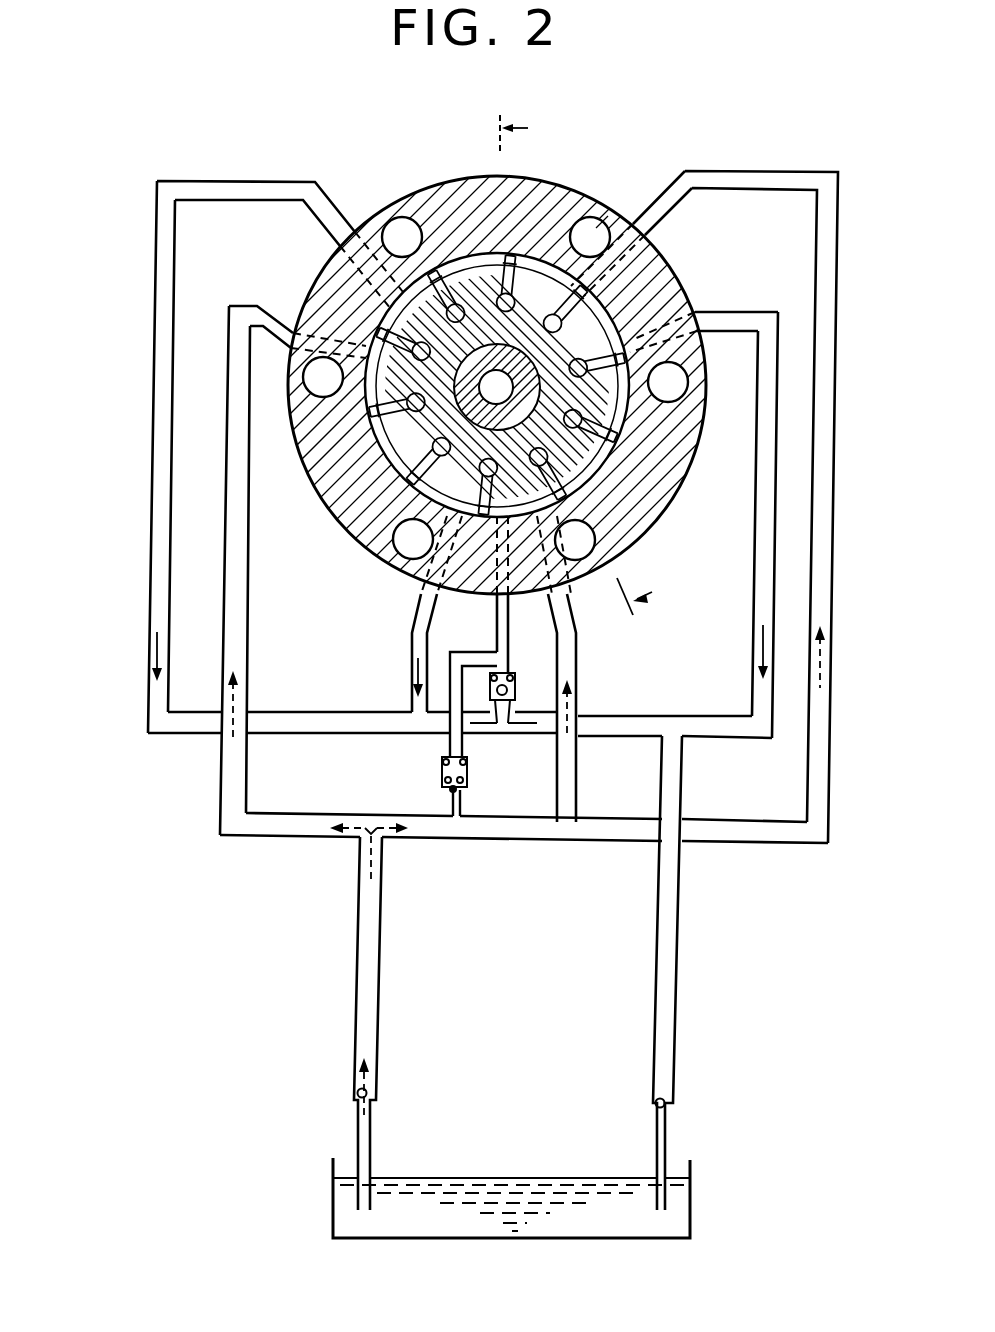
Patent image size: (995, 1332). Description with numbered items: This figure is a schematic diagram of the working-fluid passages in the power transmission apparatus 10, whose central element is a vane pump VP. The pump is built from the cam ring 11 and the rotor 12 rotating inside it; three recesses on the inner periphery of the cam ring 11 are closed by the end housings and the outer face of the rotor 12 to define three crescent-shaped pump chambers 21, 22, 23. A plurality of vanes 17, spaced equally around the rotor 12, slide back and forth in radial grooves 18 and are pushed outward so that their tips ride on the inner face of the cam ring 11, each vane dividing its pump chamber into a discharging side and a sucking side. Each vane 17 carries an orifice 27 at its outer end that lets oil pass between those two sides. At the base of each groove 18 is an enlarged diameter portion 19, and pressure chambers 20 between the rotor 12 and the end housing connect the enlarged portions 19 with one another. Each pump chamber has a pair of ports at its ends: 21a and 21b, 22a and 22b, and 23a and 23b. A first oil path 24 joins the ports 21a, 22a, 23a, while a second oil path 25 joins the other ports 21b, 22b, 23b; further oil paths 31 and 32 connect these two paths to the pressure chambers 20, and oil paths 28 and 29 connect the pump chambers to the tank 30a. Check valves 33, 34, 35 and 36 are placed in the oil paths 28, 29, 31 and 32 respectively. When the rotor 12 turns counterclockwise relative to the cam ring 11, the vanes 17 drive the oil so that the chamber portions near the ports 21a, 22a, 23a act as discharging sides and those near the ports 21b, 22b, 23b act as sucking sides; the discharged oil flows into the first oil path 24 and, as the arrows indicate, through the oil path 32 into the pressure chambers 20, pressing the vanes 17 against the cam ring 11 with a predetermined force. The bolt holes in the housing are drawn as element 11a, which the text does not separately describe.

The vane pump VP is at (319, 266).
The power transmission apparatus 10 is at (216, 817).
The cam ring 11 is at (568, 193).
The housing bolt hole 11a is at (390, 227).
The rotor 12 is at (660, 290).
The vanes 17 is at (563, 200).
The radial grooves 18 is at (650, 257).
The enlarged diameter portion 19 is at (470, 237).
The pressure chambers 20 is at (690, 314).
The pump chamber 21 is at (492, 200).
The port 21a is at (437, 233).
The port 21b is at (632, 230).
The pump chamber 22 is at (365, 458).
The port 22a is at (358, 533).
The port 22b is at (340, 418).
The pump chamber 23 is at (667, 505).
The port 23a is at (683, 467).
The port 23b is at (642, 543).
The first oil path 24 is at (150, 497).
The second oil path 25 is at (290, 830).
The orifice 27 is at (605, 217).
The oil path 28 is at (358, 987).
The oil path 29 is at (674, 983).
The tank 30a is at (503, 1197).
The oil path 31 is at (452, 745).
The oil path 32 is at (496, 626).
The check valve 33 is at (358, 1094).
The check valve 34 is at (665, 1105).
The check valve 35 is at (466, 790).
The check valve 36 is at (513, 690).